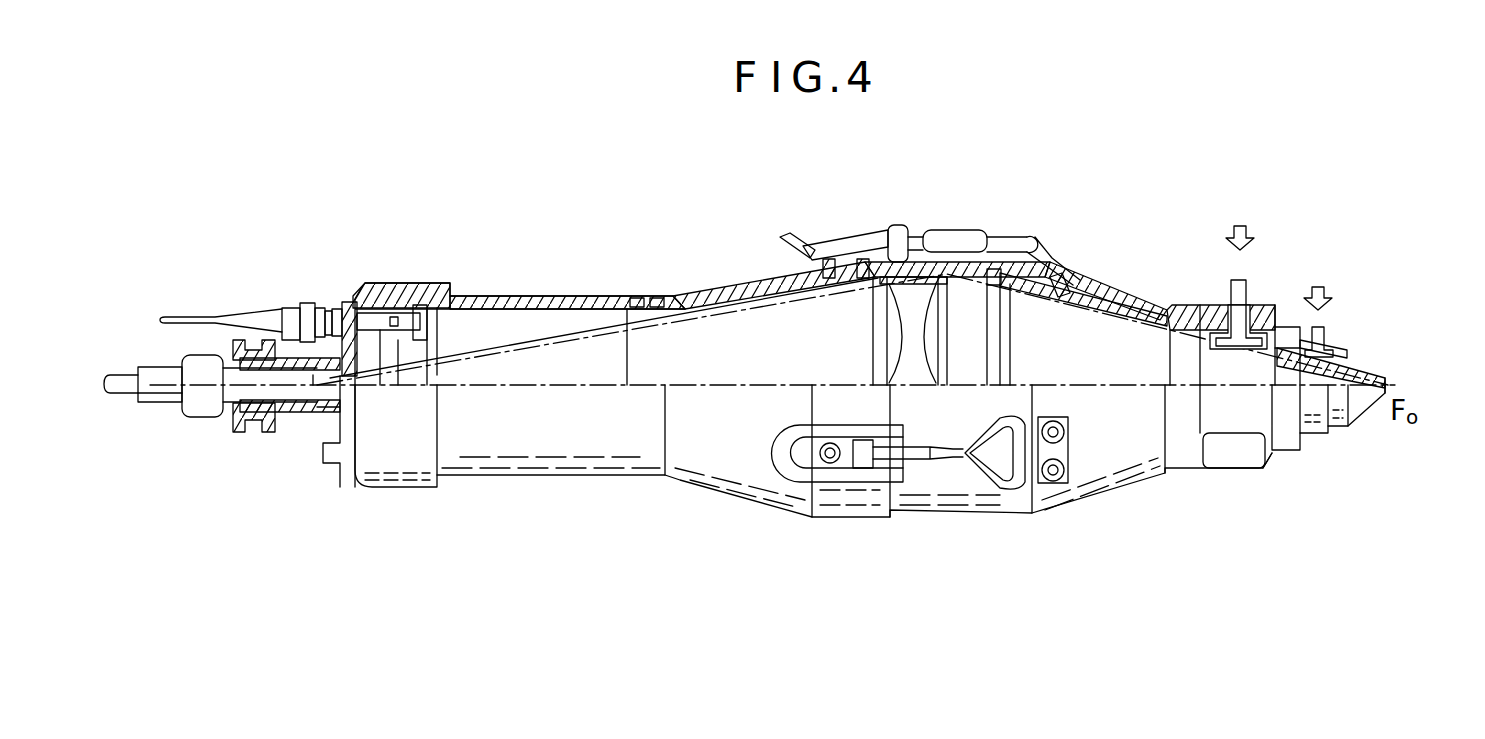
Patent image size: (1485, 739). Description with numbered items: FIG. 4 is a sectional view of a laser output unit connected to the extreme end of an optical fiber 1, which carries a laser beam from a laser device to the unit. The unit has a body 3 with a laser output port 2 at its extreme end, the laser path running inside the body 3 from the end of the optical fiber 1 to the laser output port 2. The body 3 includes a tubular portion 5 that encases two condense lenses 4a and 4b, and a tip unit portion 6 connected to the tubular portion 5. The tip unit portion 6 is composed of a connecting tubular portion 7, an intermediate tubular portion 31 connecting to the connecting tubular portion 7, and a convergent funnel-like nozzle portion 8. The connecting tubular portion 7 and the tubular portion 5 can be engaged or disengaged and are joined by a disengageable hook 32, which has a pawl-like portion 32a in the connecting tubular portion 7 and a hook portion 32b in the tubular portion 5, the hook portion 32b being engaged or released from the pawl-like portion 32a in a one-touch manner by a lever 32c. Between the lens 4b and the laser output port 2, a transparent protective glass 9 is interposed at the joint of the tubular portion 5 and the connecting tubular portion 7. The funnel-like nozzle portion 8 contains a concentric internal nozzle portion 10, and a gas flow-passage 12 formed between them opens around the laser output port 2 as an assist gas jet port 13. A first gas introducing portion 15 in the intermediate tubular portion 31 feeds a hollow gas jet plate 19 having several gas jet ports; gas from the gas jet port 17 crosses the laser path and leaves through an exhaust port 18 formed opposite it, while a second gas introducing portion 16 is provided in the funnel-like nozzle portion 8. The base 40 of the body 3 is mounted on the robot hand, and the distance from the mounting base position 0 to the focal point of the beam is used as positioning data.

The optical fiber 1 is at (121, 397).
The mounting base position 0 is at (445, 492).
The base 40 is at (565, 292).
The body 3 is at (676, 262).
The condense lens 4a is at (867, 345).
The condense lens 4b is at (992, 365).
The tubular portion 5 is at (925, 264).
The tip unit portion 6 is at (1167, 300).
The connecting tubular portion 7 is at (1118, 292).
The funnel-like nozzle portion 8 is at (1350, 362).
The protective glass 9 is at (993, 366).
The internal nozzle portion 10 is at (1360, 414).
The gas flow-passage 12 is at (1372, 372).
The assist gas jet port 13 is at (1388, 384).
The first gas introducing portion 15 is at (1245, 282).
The second gas introducing portion 16 is at (1325, 330).
The gas jet port 17 is at (1240, 352).
The exhaust port 18 is at (1247, 450).
The hollow gas jet plate 19 is at (1222, 350).
The intermediate tubular portion 31 is at (1270, 312).
The hook 32 is at (963, 230).
The pawl-like portion 32a is at (1035, 240).
The hook portion 32b is at (997, 486).
The lever 32c is at (783, 238).
The laser output port 2 is at (1387, 382).